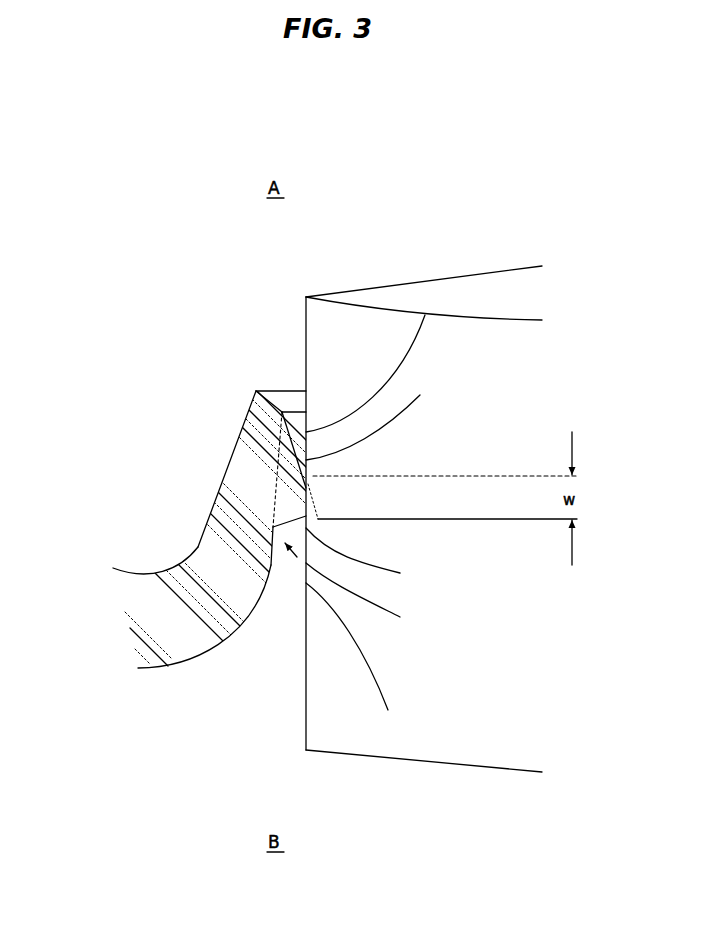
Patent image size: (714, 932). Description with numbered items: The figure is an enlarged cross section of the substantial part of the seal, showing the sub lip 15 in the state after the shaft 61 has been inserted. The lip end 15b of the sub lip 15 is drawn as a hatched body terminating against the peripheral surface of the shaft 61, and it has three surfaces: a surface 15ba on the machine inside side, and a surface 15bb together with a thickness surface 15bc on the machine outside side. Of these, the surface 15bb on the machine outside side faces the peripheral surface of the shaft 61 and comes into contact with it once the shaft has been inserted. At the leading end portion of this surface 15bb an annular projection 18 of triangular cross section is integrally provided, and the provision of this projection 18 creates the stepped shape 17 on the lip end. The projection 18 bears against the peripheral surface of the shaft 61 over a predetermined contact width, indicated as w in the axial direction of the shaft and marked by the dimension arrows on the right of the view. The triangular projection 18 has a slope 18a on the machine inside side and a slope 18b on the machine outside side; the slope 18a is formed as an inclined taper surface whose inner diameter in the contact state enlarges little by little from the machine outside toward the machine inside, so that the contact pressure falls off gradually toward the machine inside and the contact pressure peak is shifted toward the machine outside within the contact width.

The sub lip 15 is at (130, 628).
The lip end 15b is at (243, 459).
The surface in the machine inside side 15ba is at (220, 491).
The surface in the machine outside side 15bb is at (388, 710).
The thickness surface 15bc is at (272, 392).
The stepped shape 17 is at (400, 617).
The annular projection 18 is at (420, 395).
The slope in the machine inside side 18a is at (425, 315).
The slope in the machine outside side 18b is at (400, 573).
The shaft 61 is at (327, 348).